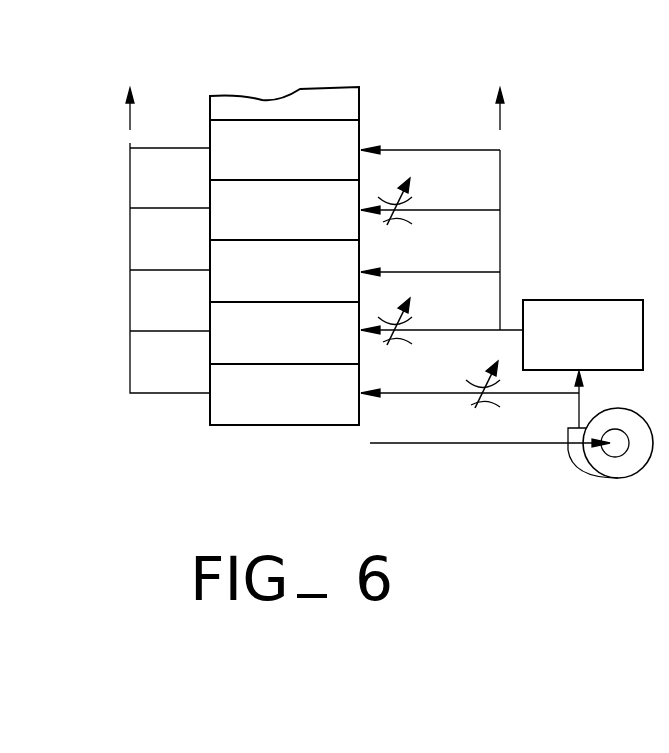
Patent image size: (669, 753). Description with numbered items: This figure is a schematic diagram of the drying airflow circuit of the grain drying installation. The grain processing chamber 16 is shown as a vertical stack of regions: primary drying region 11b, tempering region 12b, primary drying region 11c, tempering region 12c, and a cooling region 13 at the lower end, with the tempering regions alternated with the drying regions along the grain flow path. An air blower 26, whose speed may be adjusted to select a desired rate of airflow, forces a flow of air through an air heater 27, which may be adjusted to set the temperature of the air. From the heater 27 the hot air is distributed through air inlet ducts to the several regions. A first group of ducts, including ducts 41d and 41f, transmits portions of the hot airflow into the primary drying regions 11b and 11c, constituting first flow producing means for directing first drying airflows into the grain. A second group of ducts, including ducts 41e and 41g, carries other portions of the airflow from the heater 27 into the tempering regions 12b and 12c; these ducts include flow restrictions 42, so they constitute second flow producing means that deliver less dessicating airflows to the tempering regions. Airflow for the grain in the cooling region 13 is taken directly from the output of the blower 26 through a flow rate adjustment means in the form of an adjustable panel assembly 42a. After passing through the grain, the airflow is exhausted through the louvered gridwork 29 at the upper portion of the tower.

The processing chamber 16 is at (288, 72).
The primary drying region 11b is at (226, 135).
The tempering region 12b is at (230, 207).
The primary drying region 11c is at (233, 268).
The tempering region 12c is at (228, 327).
The cooling region 13 is at (228, 389).
The louvered gridwork 29 is at (130, 248).
The air inlet duct 41d is at (393, 150).
The air inlet duct 41e is at (435, 212).
The air inlet duct 41f is at (418, 272).
The air inlet duct 41g is at (458, 332).
The flow restriction 42 is at (420, 196).
The adjustable panel assembly 42a is at (467, 428).
The air heater 27 is at (614, 300).
The air blower 26 is at (597, 478).